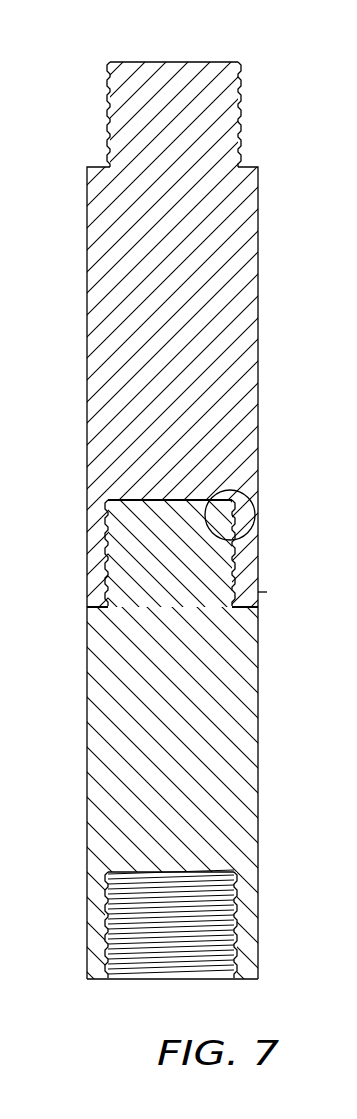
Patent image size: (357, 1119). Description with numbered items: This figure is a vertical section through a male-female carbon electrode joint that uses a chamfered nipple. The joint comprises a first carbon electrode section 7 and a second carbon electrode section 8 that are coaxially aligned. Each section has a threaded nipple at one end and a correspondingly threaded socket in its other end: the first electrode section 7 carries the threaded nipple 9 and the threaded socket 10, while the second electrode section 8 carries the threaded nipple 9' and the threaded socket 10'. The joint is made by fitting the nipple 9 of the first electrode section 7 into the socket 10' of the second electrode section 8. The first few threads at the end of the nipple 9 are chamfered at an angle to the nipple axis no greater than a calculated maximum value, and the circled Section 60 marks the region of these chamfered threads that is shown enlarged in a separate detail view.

The first carbon electrode section 7 is at (87, 672).
The second carbon electrode section 8 is at (87, 283).
The threaded nipple 9 is at (174, 554).
The threaded nipple 9' is at (148, 114).
The threaded socket 10 is at (137, 924).
The threaded socket 10' is at (149, 541).
The section 60 is at (257, 545).